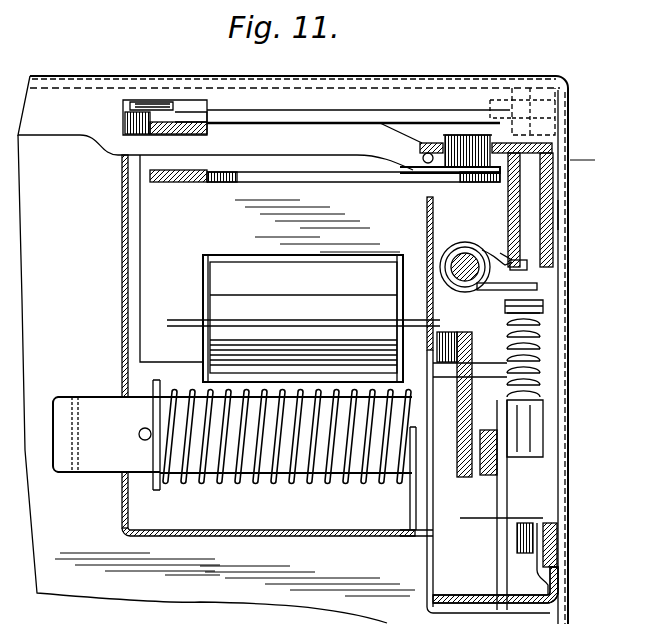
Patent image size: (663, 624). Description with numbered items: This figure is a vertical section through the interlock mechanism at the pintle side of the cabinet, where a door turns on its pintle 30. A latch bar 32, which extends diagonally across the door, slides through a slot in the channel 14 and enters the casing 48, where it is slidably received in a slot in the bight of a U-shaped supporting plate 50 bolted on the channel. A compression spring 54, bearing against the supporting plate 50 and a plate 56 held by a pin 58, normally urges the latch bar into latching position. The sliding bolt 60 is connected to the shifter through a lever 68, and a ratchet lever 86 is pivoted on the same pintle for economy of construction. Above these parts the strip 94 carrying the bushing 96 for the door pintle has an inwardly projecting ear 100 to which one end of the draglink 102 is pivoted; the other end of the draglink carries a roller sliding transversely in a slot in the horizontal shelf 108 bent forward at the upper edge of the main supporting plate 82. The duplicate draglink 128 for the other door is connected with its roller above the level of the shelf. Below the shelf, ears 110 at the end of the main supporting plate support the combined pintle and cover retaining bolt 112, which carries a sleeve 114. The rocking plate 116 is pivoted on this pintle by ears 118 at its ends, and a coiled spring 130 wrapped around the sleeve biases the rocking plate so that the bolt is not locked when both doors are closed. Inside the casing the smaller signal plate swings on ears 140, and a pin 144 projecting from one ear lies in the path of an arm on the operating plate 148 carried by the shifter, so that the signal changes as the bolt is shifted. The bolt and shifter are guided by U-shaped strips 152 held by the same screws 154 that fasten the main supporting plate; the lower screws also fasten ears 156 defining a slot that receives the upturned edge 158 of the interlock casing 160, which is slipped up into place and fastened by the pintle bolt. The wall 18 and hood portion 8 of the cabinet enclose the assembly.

The hood portion 8 is at (386, 160).
The channel 14 is at (312, 133).
The wall 18 is at (569, 155).
The pintle 30 is at (551, 79).
The latch bar 32 is at (67, 397).
The casing 48 is at (122, 296).
The U-shaped supporting plate 50 is at (412, 497).
The compression spring 54 is at (257, 483).
The plate 56 is at (158, 492).
The pin 58 is at (139, 433).
The bolt 60 is at (413, 524).
The lever 68 is at (500, 477).
The main supporting plate 82 is at (559, 213).
The ratchet lever 86 is at (497, 430).
The strip 94 is at (398, 113).
The bushing 96 is at (568, 111).
The ear 100 is at (187, 112).
The draglink 102 is at (187, 185).
The horizontal shelf 108 is at (432, 140).
The ears 110 is at (462, 242).
The combined pintle and cover retaining bolt 112 is at (450, 253).
The sleeve 114 is at (500, 253).
The rocking plate 116 is at (523, 200).
The ears 118 is at (427, 214).
The draglink 128 is at (197, 128).
The coiled spring 130 is at (540, 287).
The ears 140 is at (397, 308).
The pin 144 is at (400, 337).
The operating plate 148 is at (465, 362).
The U-shaped strips 152 is at (542, 540).
The screws 154 is at (533, 530).
The ears 156 is at (555, 560).
The upturned edge 158 is at (557, 594).
The interlock casing 160 is at (427, 558).